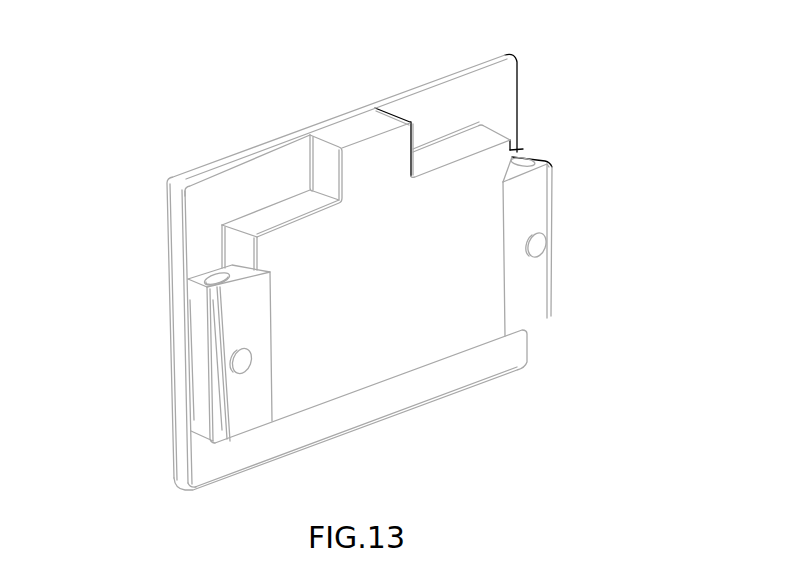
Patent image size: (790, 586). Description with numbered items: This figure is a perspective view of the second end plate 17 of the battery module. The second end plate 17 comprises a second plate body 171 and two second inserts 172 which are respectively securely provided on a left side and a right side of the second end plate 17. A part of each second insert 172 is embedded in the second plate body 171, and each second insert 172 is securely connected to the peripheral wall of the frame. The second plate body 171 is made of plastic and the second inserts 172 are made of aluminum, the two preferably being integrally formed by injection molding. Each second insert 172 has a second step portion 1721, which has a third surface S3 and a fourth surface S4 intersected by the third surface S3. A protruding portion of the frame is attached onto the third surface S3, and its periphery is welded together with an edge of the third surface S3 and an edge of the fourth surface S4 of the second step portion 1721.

The second end plate 17 is at (557, 62).
The second plate body 171 is at (167, 222).
The second insert 172 is at (537, 208).
The second step portion 1721 is at (113, 303).
The third surface S3 is at (193, 332).
The fourth surface S4 is at (213, 366).